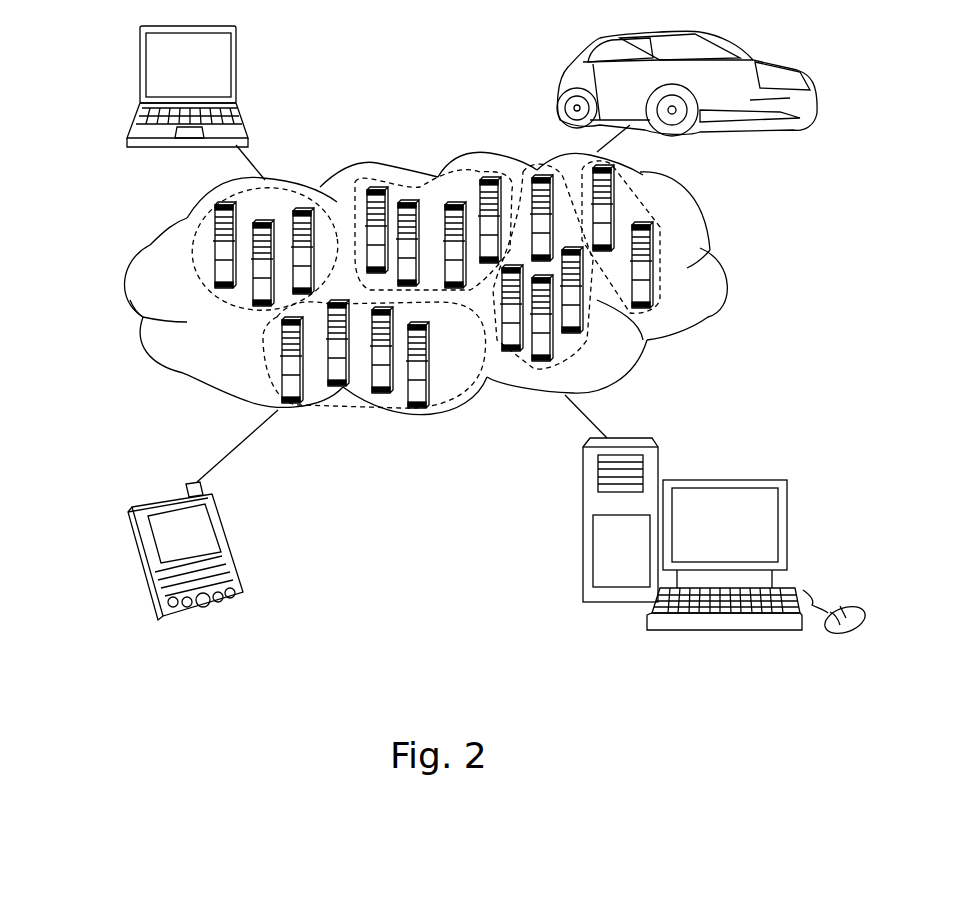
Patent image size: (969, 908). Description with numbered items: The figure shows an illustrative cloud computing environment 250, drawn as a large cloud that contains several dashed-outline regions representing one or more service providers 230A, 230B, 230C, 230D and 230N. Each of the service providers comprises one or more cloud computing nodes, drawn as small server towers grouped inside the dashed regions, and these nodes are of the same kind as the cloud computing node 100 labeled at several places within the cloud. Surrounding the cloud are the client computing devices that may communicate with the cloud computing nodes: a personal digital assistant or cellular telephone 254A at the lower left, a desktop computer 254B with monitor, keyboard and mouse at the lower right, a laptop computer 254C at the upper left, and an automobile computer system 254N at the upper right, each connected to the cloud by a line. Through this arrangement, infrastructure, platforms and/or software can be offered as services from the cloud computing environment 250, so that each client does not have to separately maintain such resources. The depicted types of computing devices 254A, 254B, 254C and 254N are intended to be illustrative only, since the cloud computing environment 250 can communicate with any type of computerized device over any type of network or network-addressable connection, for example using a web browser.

The cloud computing node 100 is at (478, 190).
The service provider 230A is at (135, 297).
The service provider 230B is at (395, 412).
The service provider 230C is at (600, 345).
The service provider 230D is at (478, 172).
The service provider 230N is at (660, 292).
The cloud computing environment 250 is at (727, 297).
The personal digital assistant or cellular telephone 254A is at (230, 540).
The desktop computer 254B is at (750, 480).
The laptop computer 254C is at (140, 77).
The automobile computer system 254N is at (560, 78).